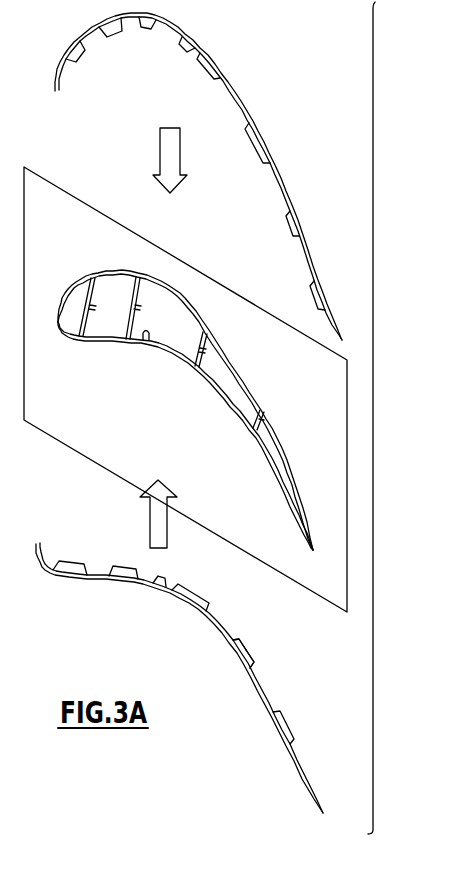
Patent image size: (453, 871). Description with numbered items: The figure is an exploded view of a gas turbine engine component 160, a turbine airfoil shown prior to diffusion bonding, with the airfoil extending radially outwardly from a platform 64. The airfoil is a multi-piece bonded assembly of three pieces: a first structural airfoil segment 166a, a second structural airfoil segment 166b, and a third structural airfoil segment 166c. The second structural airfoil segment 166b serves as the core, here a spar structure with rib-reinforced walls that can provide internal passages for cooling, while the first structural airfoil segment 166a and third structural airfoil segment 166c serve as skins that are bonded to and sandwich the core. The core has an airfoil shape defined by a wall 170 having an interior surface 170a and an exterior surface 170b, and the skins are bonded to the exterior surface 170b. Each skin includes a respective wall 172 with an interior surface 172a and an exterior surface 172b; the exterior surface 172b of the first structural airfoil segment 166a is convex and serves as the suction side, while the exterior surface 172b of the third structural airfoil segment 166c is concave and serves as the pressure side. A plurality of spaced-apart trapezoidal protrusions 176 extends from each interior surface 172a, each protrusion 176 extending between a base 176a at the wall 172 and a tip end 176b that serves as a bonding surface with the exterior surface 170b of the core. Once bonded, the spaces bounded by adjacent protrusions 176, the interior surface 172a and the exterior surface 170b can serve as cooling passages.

The component 160 is at (373, 420).
The platform 64 is at (62, 413).
The first structural airfoil segment 166a is at (290, 180).
The second structural airfoil segment 166b is at (255, 387).
The third structural airfoil segment 166c is at (190, 604).
The wall 170 is at (155, 349).
The interior surface 170a is at (143, 343).
The exterior surface 170b is at (203, 369).
The wall 172 is at (253, 117).
The interior surface 172a is at (221, 64).
The exterior surface 172b is at (239, 89).
The protrusions 176 is at (203, 606).
The base 176a is at (234, 640).
The tip end 176b is at (253, 659).